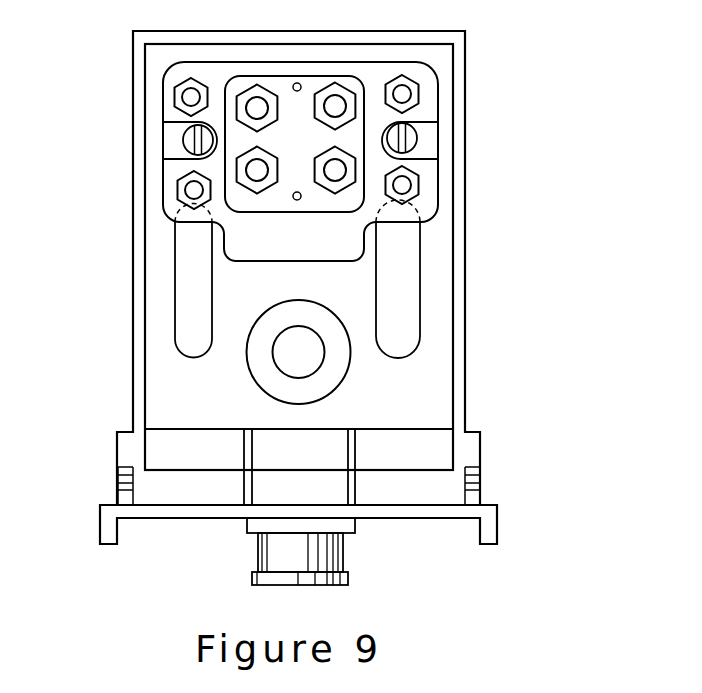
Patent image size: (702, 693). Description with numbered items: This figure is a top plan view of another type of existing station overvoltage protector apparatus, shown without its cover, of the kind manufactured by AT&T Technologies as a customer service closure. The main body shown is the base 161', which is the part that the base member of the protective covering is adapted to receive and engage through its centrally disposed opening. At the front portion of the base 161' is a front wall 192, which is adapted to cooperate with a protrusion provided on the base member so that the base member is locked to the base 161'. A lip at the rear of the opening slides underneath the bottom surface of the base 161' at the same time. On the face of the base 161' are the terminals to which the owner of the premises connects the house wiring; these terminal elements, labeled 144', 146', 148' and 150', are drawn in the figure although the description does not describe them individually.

The terminal nut 144' is at (207, 58).
The terminal nut 146' is at (456, 93).
The terminal nut 148' is at (139, 204).
The terminal nut 150' is at (456, 186).
The base 161' is at (329, 257).
The front wall 192 is at (473, 517).